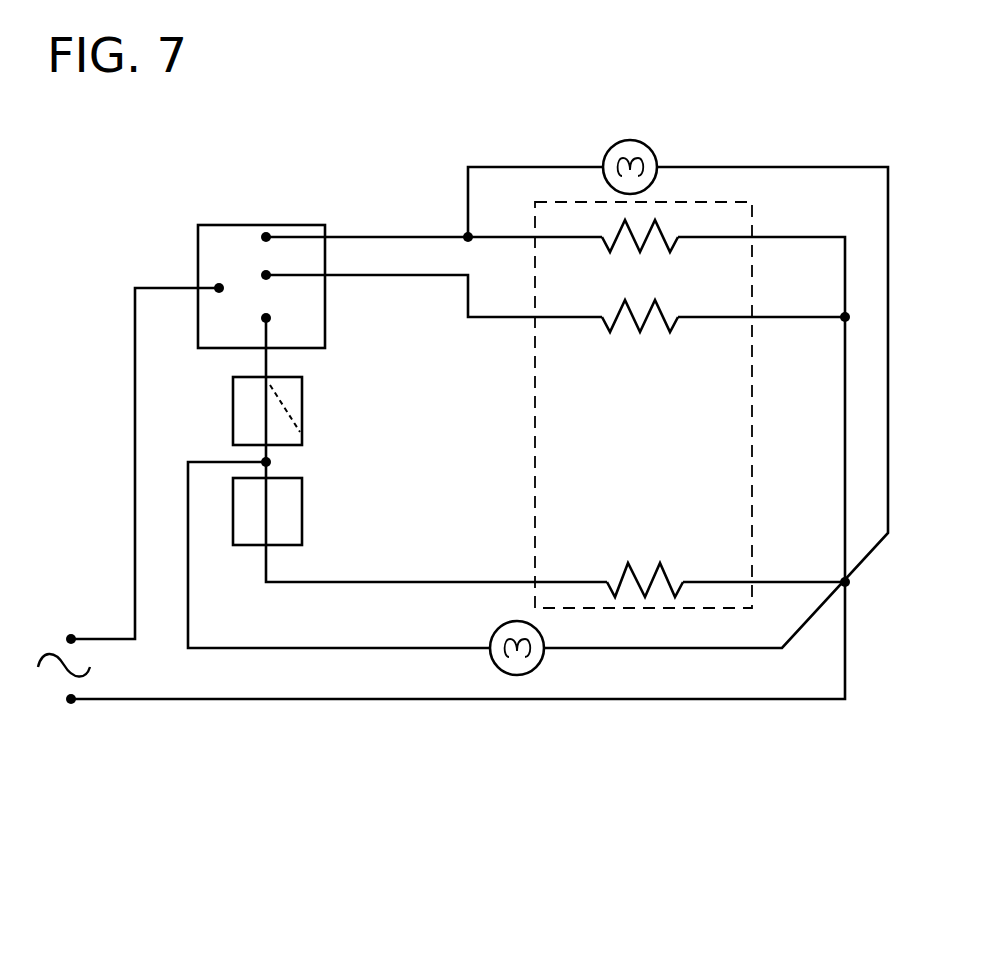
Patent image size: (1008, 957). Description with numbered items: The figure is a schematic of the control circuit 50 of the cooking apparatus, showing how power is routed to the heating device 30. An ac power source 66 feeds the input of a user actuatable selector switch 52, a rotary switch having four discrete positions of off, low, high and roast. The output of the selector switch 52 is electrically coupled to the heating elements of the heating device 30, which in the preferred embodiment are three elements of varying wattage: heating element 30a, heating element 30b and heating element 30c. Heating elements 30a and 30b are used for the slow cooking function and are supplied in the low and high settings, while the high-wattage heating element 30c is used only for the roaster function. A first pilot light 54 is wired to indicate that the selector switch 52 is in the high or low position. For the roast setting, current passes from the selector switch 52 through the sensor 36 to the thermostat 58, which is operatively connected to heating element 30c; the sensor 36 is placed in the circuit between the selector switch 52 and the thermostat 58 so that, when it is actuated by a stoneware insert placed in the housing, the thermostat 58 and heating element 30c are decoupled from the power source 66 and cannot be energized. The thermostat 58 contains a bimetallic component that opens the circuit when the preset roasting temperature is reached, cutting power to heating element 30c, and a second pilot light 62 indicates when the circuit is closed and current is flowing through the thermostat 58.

The control circuit 50 is at (400, 728).
The selector switch 52 is at (198, 244).
The first pilot light 54 is at (647, 140).
The thermostat 58 is at (302, 518).
The sensor 36 is at (302, 408).
The heating device 30 is at (535, 382).
The heating element 30a is at (642, 248).
The heating element 30b is at (642, 328).
The heating element 30c is at (643, 570).
The second pilot light 62 is at (537, 670).
The power source 66 is at (52, 630).